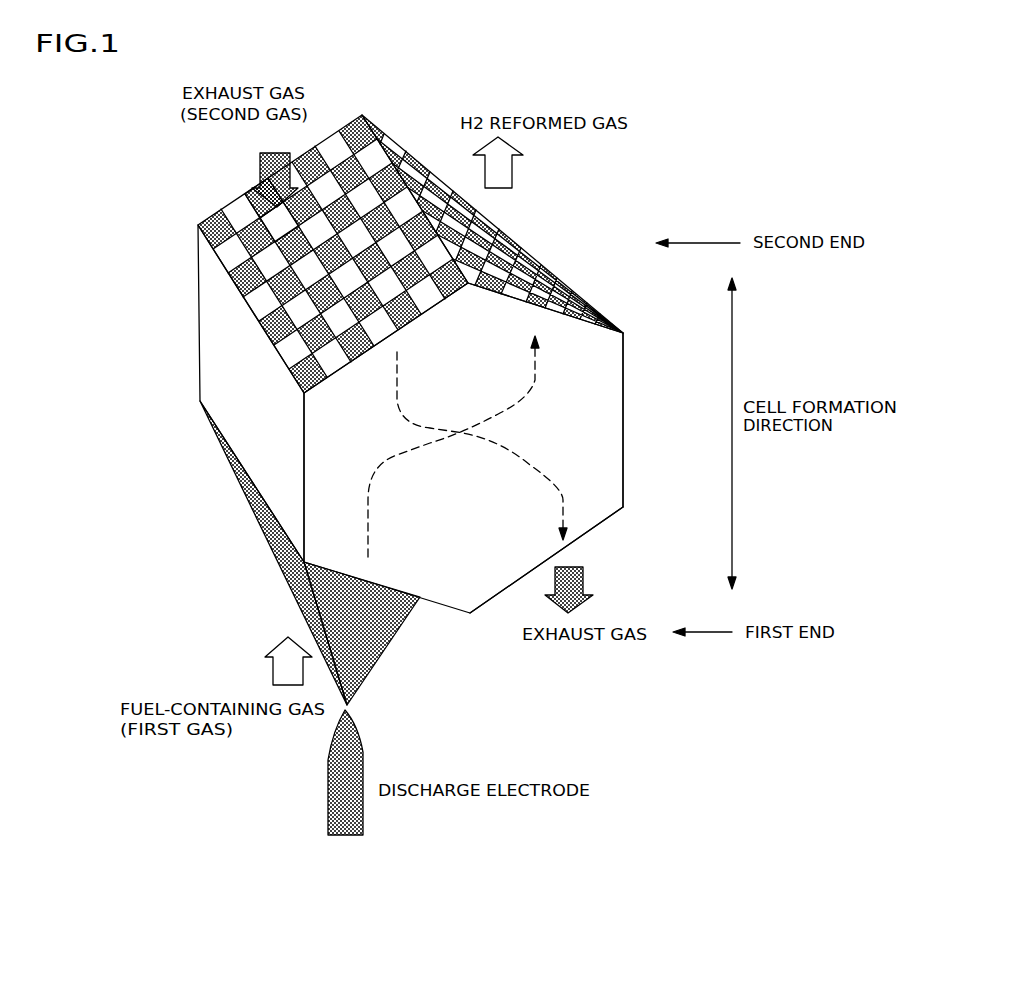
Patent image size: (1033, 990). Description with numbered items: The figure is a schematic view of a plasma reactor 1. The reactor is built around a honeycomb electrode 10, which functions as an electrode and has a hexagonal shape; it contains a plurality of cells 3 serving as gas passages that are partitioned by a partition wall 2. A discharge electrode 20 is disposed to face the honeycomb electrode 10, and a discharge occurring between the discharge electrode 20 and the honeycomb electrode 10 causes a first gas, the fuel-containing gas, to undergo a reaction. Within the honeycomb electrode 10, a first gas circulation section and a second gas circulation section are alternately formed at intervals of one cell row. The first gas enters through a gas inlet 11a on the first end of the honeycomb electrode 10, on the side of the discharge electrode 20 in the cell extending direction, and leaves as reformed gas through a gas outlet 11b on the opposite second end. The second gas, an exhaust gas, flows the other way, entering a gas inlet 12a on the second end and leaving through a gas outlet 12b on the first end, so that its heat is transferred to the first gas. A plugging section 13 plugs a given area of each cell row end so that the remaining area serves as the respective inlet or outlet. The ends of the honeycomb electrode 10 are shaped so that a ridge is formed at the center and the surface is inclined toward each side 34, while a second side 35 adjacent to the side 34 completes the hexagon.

The plasma reactor 1 is at (635, 75).
The honeycomb electrode 10 is at (185, 217).
The partition wall 2 is at (268, 263).
The cell 3 is at (268, 270).
The gas inlet 11a is at (392, 590).
The gas outlet 11b is at (518, 227).
The gas inlet 12a is at (258, 208).
The gas outlet 12b is at (587, 533).
The plugging section 13 is at (200, 401).
The discharge electrode 20 is at (363, 820).
The side 34 is at (258, 447).
The second side 35 is at (613, 442).